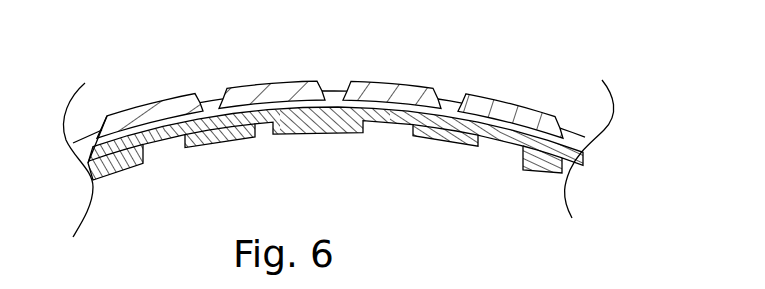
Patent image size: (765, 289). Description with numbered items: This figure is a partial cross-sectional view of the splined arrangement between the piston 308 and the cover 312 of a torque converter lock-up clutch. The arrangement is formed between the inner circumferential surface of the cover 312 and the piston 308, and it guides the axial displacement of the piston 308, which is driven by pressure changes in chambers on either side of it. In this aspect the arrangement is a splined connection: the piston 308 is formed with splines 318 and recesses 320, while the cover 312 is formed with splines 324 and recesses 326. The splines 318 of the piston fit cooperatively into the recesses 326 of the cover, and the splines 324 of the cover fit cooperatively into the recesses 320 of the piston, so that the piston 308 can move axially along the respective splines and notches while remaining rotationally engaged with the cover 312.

The piston 308 is at (530, 173).
The cover 312 is at (340, 123).
The splines 318 is at (489, 112).
The recesses 320 is at (436, 116).
The splines 324 is at (211, 128).
The recesses 326 is at (340, 118).